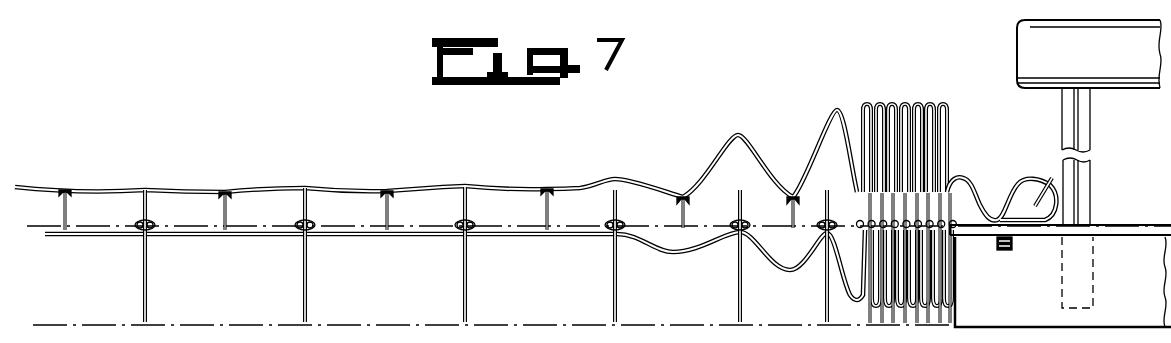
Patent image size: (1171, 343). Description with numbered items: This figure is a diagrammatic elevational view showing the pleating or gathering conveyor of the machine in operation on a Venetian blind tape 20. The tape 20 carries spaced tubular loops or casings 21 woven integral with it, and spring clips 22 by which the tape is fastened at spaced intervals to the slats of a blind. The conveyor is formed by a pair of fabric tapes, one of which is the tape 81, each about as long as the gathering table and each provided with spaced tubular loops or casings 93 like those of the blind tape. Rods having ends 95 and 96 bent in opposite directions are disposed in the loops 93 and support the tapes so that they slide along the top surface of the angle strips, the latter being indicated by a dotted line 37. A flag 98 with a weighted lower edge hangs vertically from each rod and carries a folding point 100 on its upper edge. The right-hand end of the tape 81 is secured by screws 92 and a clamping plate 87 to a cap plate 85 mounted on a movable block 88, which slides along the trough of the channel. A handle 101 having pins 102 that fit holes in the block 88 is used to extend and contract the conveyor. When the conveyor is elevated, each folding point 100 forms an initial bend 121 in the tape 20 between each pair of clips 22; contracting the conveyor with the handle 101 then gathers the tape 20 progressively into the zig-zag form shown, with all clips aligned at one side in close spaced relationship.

The tape 20 is at (443, 187).
The tubular loops or casings 21 is at (393, 195).
The spring clip 22 is at (68, 220).
The track 37 is at (527, 225).
The fabric tape 81 is at (383, 238).
The cap plate 85 is at (1122, 227).
The clamping plate 87 is at (1027, 237).
The movable block 88 is at (1010, 310).
The screws 92 is at (1003, 251).
The tubular loops or casings 93 is at (130, 232).
The bent rod end 95 is at (318, 222).
The bent rod end 96 is at (297, 222).
The flag 98 is at (307, 277).
The folding point 100 is at (618, 203).
The handle 101 is at (1045, 58).
The pins 102 is at (1078, 132).
The initial bend 121 is at (145, 188).